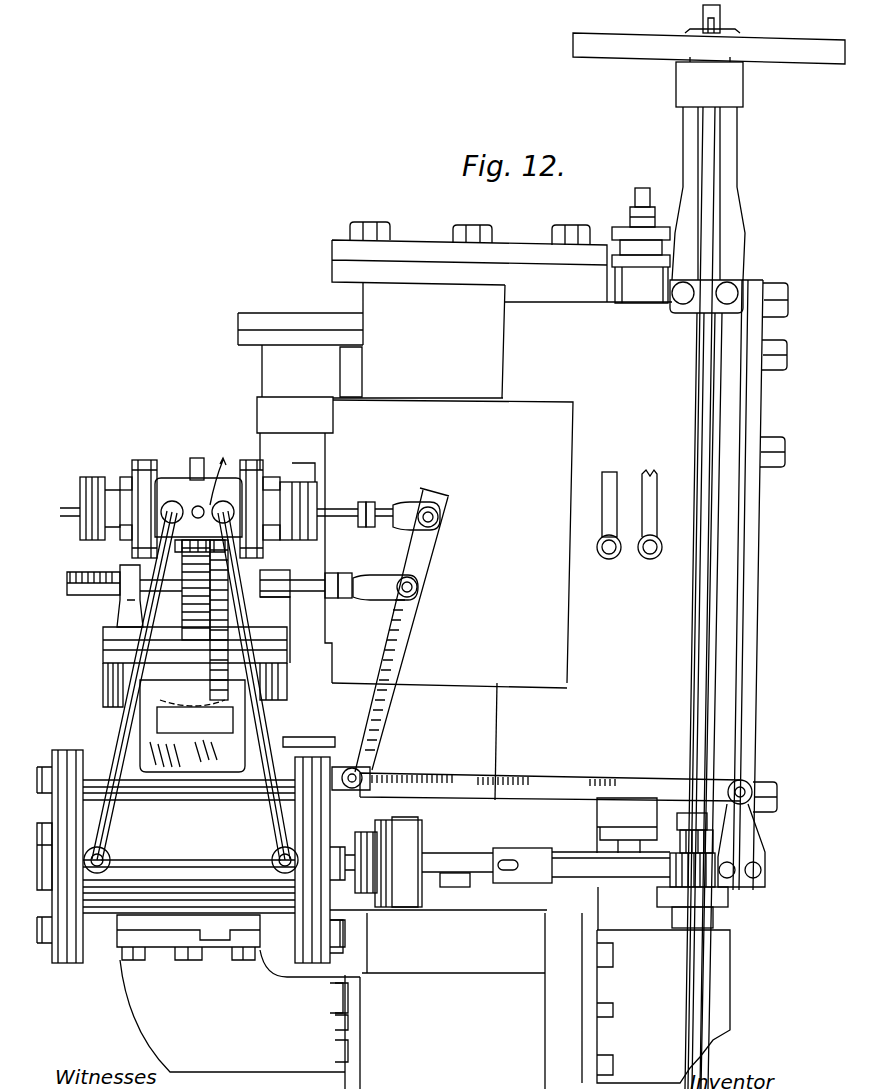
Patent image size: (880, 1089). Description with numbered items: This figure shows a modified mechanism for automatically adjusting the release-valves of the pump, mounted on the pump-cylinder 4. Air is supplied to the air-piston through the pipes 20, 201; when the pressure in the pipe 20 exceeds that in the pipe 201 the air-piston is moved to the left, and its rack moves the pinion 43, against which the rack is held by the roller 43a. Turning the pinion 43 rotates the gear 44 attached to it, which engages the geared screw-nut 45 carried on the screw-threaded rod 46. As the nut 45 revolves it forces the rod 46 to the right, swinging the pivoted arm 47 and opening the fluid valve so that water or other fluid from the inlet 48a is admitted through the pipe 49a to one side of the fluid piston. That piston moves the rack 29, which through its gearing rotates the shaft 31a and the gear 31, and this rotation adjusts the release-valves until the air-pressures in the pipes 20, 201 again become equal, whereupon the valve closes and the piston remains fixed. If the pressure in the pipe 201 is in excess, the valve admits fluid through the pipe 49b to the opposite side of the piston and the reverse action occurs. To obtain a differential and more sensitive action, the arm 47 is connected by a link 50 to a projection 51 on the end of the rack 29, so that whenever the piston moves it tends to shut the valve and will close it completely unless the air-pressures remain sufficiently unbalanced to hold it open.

The pump-cylinder 4 is at (330, 270).
The pipe 20 is at (620, 458).
The pipe 201 is at (659, 458).
The rack 29 is at (560, 858).
The gear 31 is at (651, 58).
The shaft 31a is at (697, 341).
The pinion 43 is at (117, 647).
The roller 43a is at (190, 565).
The gear 44 is at (210, 688).
The geared screw-nut 45 is at (246, 572).
The screw-threaded rod 46 is at (318, 592).
The pivoted arm 47 is at (397, 649).
The inlet 48a is at (201, 447).
The pipe 49a is at (130, 688).
The pipe 49b is at (273, 700).
The link 50 is at (429, 775).
The projection 51 is at (747, 834).